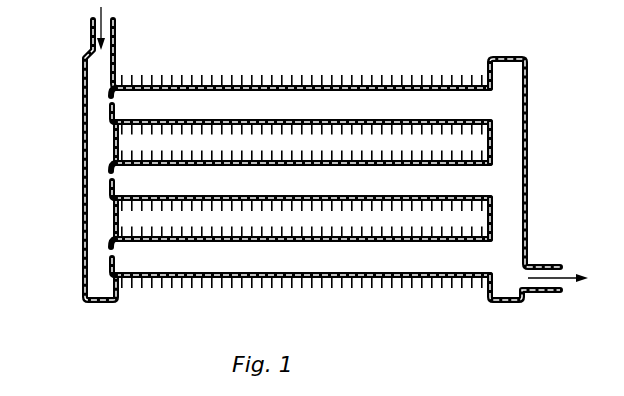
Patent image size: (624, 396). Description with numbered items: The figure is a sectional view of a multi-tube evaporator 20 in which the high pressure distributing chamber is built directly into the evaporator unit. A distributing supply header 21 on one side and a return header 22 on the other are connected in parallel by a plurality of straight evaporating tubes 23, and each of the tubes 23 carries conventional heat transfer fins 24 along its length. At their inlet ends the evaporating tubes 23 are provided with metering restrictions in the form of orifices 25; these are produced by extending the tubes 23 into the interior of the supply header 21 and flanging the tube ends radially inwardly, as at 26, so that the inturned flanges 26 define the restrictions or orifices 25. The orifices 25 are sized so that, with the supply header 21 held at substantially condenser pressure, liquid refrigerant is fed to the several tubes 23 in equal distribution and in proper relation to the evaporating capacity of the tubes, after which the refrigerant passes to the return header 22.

The evaporator 20 is at (321, 75).
The distributing supply header 21 is at (86, 207).
The return header 22 is at (528, 165).
The evaporating tubes 23 is at (391, 95).
The heat transfer fins 24 is at (186, 78).
The orifices 25 is at (110, 105).
The radially inwardly flanged ends 26 is at (108, 98).